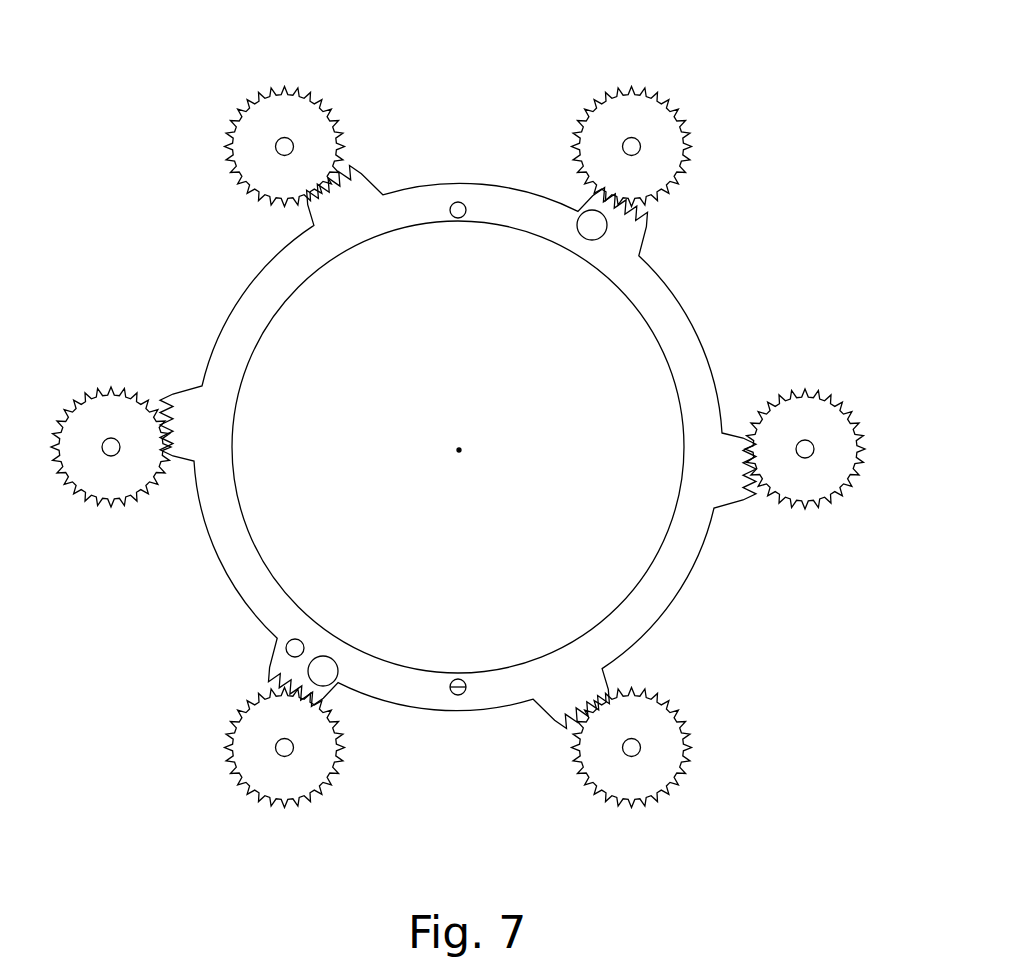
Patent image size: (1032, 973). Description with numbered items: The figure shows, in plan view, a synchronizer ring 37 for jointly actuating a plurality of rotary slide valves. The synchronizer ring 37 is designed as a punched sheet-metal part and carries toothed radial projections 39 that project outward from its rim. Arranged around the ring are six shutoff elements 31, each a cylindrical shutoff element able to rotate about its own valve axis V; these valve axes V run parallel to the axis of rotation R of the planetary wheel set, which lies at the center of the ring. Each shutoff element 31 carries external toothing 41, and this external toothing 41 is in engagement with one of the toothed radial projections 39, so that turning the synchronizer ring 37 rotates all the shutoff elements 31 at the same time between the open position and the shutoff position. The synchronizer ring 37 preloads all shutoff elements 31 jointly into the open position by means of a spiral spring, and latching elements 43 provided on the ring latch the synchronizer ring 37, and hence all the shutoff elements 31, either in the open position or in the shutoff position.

The shutoff element 31 is at (650, 124).
The synchronizer ring 37 is at (665, 582).
The toothed radial projections 39 is at (363, 193).
The external toothing 41 is at (237, 95).
The latching elements 43 is at (606, 236).
The valve axis V is at (288, 121).
The axis of rotation R is at (476, 461).